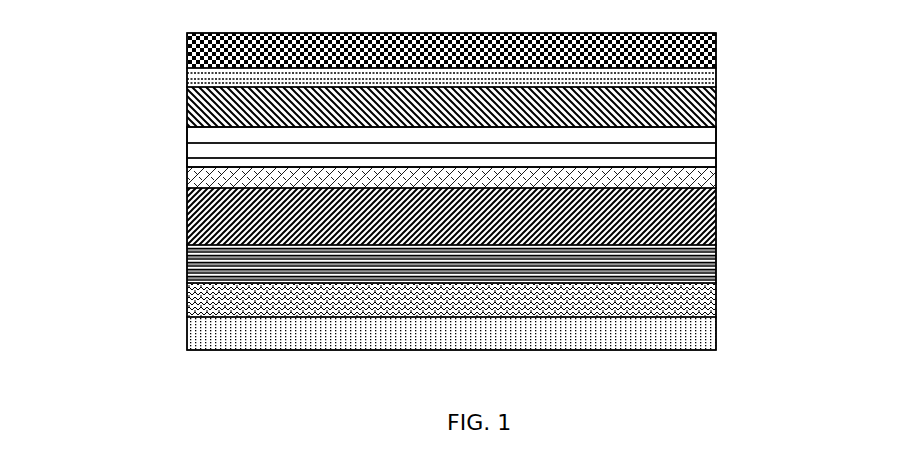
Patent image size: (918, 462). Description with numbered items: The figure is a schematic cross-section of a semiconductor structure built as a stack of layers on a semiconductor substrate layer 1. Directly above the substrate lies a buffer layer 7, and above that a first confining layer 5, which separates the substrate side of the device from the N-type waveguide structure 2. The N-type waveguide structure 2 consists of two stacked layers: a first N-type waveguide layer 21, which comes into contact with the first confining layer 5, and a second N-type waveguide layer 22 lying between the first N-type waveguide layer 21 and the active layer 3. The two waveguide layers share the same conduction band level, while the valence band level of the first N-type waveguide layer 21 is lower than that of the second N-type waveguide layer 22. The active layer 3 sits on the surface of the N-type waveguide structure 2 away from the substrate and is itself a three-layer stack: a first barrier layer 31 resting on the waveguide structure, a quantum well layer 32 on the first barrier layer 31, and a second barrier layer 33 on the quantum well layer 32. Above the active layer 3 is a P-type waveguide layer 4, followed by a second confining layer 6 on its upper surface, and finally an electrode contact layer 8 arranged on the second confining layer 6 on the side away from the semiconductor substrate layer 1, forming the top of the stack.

The semiconductor substrate layer 1 is at (716, 333).
The N-type waveguide structure 2 is at (527, 206).
The first N-type waveguide layer 21 is at (716, 217).
The second N-type waveguide layer 22 is at (716, 178).
The active layer 3 is at (382, 151).
The first barrier layer 31 is at (421, 179).
The quantum well layer 32 is at (187, 149).
The second barrier layer 33 is at (187, 132).
The P-type waveguide layer 4 is at (716, 110).
The first confining layer 5 is at (716, 266).
The second confining layer 6 is at (716, 71).
The buffer layer 7 is at (716, 302).
The electrode contact layer 8 is at (716, 49).